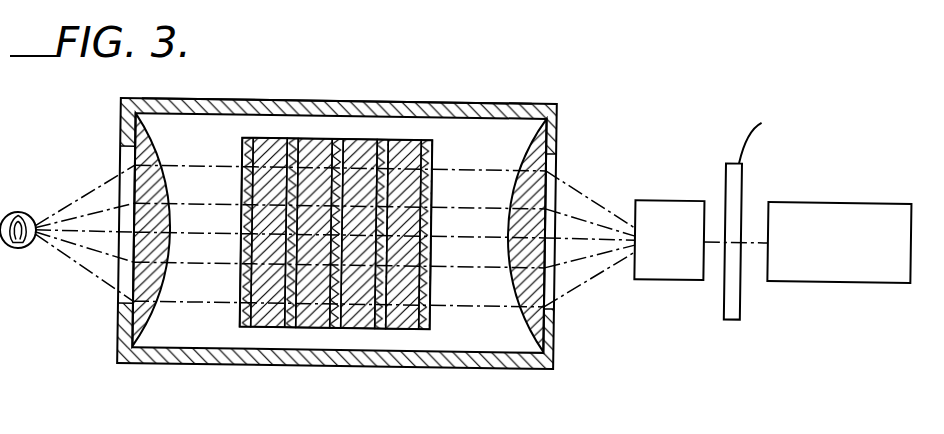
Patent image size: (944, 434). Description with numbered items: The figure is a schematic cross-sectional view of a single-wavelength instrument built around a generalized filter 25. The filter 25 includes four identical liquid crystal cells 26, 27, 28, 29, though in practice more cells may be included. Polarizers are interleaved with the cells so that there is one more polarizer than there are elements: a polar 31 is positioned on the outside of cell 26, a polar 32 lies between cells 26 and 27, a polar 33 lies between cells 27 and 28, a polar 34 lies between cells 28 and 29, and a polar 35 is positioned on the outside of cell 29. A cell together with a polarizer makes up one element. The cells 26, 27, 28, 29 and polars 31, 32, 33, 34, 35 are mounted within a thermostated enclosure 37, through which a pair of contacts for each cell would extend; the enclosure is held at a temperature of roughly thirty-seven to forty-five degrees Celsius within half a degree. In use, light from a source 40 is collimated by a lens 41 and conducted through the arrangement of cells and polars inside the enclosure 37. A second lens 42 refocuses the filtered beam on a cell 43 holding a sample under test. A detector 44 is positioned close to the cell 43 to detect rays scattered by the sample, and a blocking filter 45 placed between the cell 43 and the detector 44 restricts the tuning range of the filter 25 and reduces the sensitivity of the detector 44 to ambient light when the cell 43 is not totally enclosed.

The filter 25 is at (467, 101).
The cell 26 is at (259, 328).
The cell 27 is at (317, 328).
The cell 28 is at (353, 328).
The cell 29 is at (411, 328).
The polar 31 is at (241, 324).
The polar 32 is at (291, 328).
The polar 33 is at (339, 328).
The polar 34 is at (381, 328).
The polar 35 is at (431, 322).
The thermostated enclosure 37 is at (349, 101).
The source 40 is at (22, 216).
The lens 41 is at (155, 154).
The second lens 42 is at (526, 149).
The cell 43 is at (652, 196).
The detector 44 is at (821, 196).
The blocking filter 45 is at (725, 163).